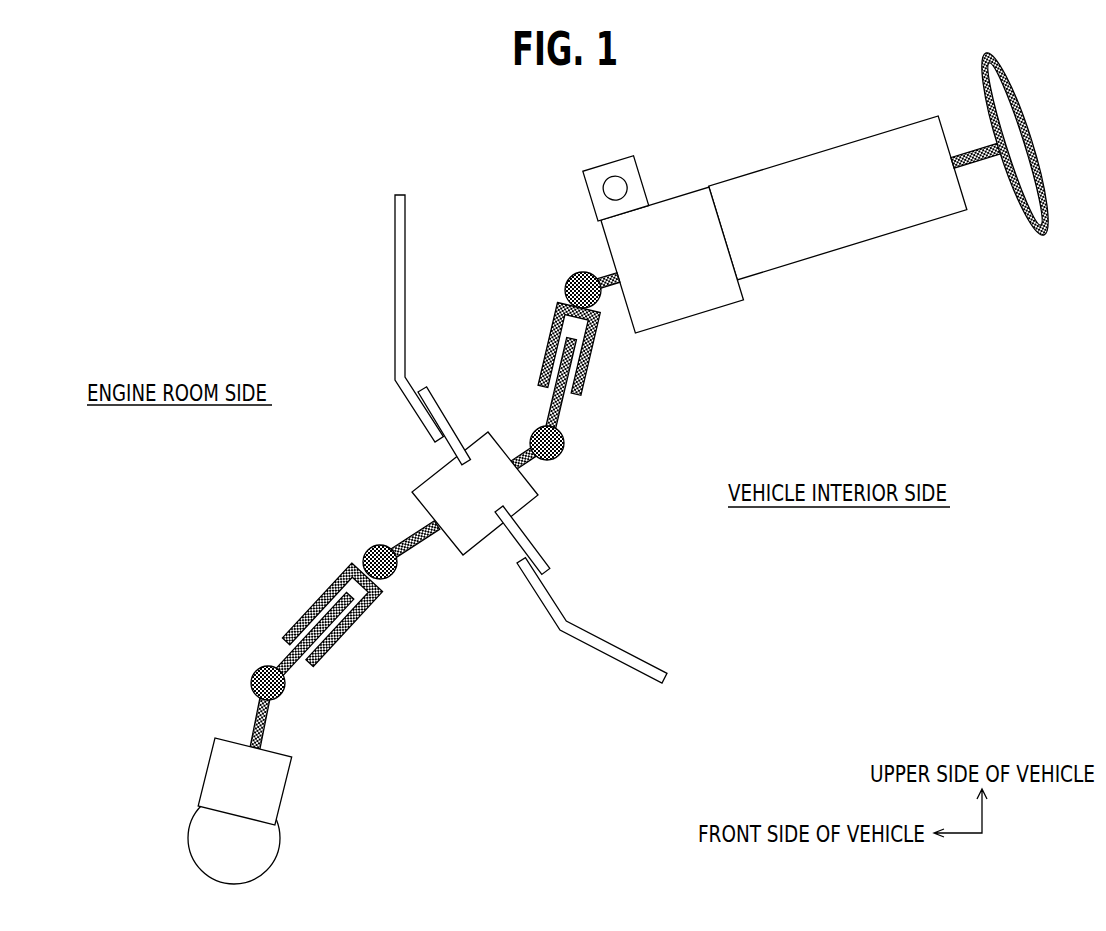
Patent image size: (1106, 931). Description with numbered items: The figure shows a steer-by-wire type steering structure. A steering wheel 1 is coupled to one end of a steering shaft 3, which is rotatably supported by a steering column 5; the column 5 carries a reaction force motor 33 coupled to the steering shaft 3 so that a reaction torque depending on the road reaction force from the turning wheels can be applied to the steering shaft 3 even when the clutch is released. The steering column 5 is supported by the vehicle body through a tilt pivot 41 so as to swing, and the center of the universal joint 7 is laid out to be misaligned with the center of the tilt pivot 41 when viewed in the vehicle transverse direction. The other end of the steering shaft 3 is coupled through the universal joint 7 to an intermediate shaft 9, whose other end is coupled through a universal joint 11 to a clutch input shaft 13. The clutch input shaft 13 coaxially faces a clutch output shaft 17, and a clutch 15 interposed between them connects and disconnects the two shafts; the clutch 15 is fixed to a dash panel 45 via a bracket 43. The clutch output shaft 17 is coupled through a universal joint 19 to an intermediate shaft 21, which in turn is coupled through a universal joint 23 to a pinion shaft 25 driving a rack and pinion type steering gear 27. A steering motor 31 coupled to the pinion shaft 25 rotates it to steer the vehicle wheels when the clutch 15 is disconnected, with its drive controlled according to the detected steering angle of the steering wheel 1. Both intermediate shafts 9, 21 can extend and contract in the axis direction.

The steering wheel 1 is at (1020, 98).
The steering shaft 3 is at (980, 167).
The steering column 5 is at (817, 183).
The universal joint 7 is at (578, 277).
The intermediate shaft 9 is at (585, 387).
The universal joint 11 is at (537, 430).
The clutch input shaft 13 is at (532, 467).
The clutch 15 is at (422, 487).
The clutch output shaft 17 is at (423, 543).
The universal joint 19 is at (370, 548).
The intermediate shaft 21 is at (347, 637).
The universal joint 23 is at (255, 673).
The pinion shaft 25 is at (253, 727).
The steering gear 27 is at (190, 833).
The steering motor 31 is at (268, 790).
The reaction force motor 33 is at (698, 307).
The tilt pivot 41 is at (615, 180).
The bracket 43 is at (423, 393).
The dash panel 45 is at (395, 277).